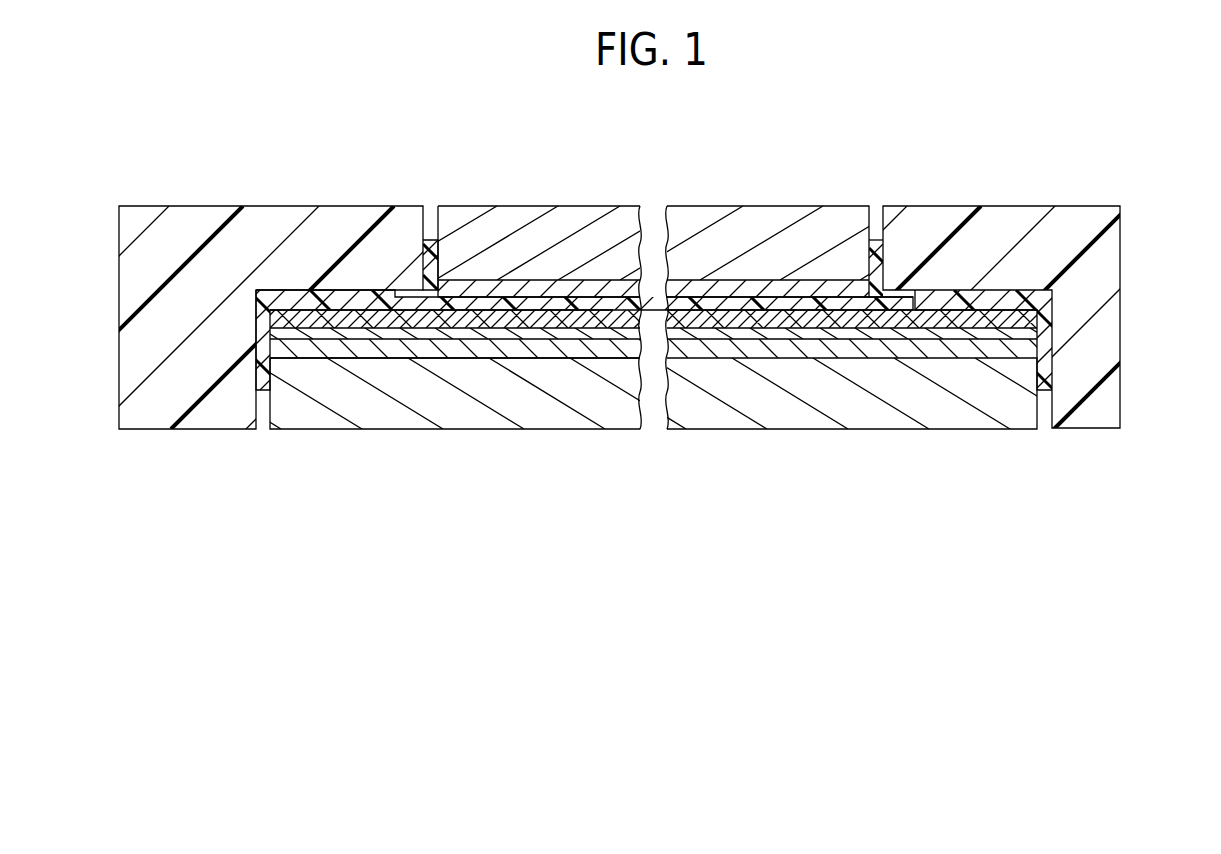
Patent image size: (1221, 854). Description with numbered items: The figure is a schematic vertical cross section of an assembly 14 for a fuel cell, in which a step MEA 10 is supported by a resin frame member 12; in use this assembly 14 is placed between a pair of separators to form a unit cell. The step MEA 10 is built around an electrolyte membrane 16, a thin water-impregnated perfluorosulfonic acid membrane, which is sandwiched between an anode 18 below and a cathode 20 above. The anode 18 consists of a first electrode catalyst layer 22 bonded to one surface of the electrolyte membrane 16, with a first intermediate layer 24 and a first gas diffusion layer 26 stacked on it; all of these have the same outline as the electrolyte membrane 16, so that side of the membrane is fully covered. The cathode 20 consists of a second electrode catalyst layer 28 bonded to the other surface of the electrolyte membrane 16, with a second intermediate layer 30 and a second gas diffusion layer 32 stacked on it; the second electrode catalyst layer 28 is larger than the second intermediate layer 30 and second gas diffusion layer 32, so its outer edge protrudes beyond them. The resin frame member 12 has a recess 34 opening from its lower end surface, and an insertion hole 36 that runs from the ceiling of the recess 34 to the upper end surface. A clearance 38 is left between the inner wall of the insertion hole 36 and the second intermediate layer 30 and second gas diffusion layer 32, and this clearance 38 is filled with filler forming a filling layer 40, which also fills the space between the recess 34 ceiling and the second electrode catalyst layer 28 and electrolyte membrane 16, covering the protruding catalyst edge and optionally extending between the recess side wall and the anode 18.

The step MEA 10 is at (300, 372).
The resin frame member 12 is at (268, 216).
The assembly 14 is at (785, 100).
The electrolyte membrane 16 is at (612, 312).
The anode 18 is at (654, 423).
The cathode 20 is at (571, 362).
The first electrode catalyst layer 22 is at (545, 333).
The first intermediate layer 24 is at (500, 350).
The first gas diffusion layer 26 is at (565, 473).
The second electrode catalyst layer 28 is at (720, 302).
The second intermediate layer 30 is at (772, 285).
The second gas diffusion layer 32 is at (823, 262).
The recess 34 is at (1033, 300).
The insertion hole 36 is at (438, 268).
The clearance 38 is at (432, 220).
The filling layer 40 is at (987, 300).